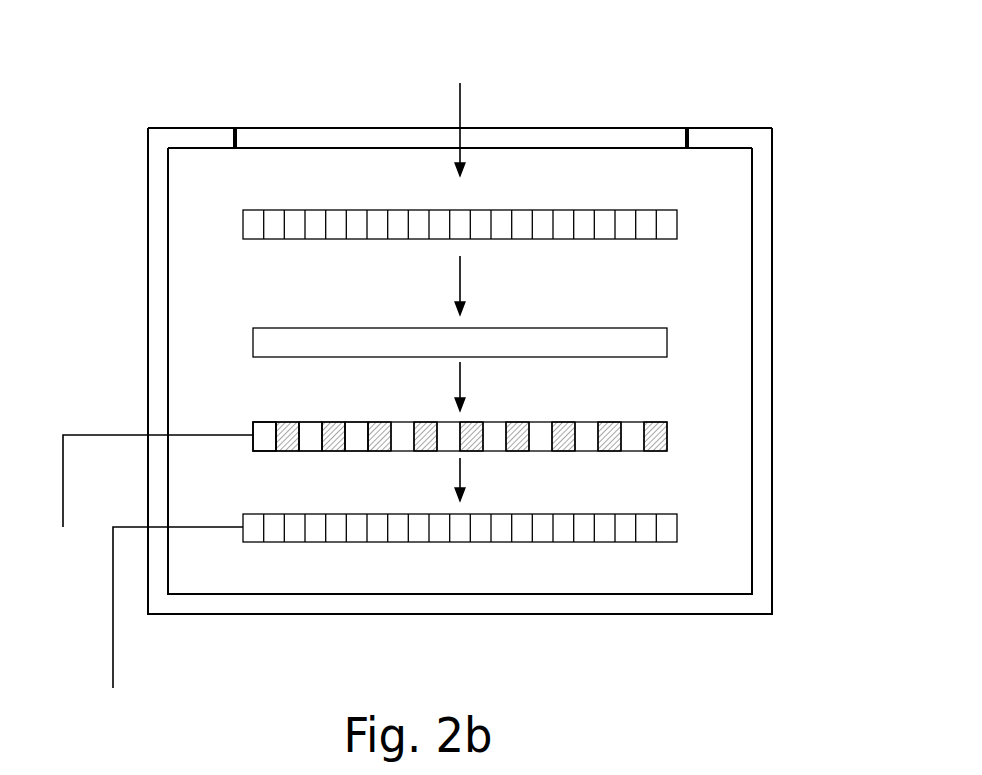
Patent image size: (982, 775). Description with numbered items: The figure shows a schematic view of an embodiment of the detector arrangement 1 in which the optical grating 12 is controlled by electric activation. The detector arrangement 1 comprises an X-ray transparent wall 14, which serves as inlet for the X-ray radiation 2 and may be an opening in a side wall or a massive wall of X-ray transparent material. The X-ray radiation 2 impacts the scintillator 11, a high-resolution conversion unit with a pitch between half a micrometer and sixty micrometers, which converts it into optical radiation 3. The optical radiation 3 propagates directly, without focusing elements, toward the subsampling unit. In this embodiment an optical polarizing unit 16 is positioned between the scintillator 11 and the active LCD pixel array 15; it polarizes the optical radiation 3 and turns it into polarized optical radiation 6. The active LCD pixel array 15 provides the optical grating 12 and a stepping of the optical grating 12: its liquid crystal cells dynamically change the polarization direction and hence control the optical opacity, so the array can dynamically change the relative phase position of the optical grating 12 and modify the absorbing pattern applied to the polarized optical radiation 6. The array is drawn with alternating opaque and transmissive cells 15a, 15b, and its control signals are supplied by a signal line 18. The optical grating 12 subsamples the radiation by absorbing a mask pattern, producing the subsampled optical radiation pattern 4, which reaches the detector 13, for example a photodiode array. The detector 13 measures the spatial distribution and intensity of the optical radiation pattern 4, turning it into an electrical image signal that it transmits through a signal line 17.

The detector arrangement 1 is at (773, 605).
The X-ray transparent wall 14 is at (621, 137).
The X-ray radiation 2 is at (460, 100).
The optical radiation 3 is at (460, 277).
The polarized optical radiation 6 is at (460, 375).
The subsampled optical radiation pattern 4 is at (460, 470).
The scintillator 11 is at (677, 221).
The optical polarizing unit 16 is at (657, 345).
The optical grating 12 is at (523, 437).
The active LCD pixel array 15 is at (253, 442).
The first group of electrode segments 15a is at (287, 432).
The second group of electrode segments 15b is at (263, 433).
The detector 13 is at (677, 527).
The signal line 17 is at (112, 606).
The signal line 18 is at (107, 435).